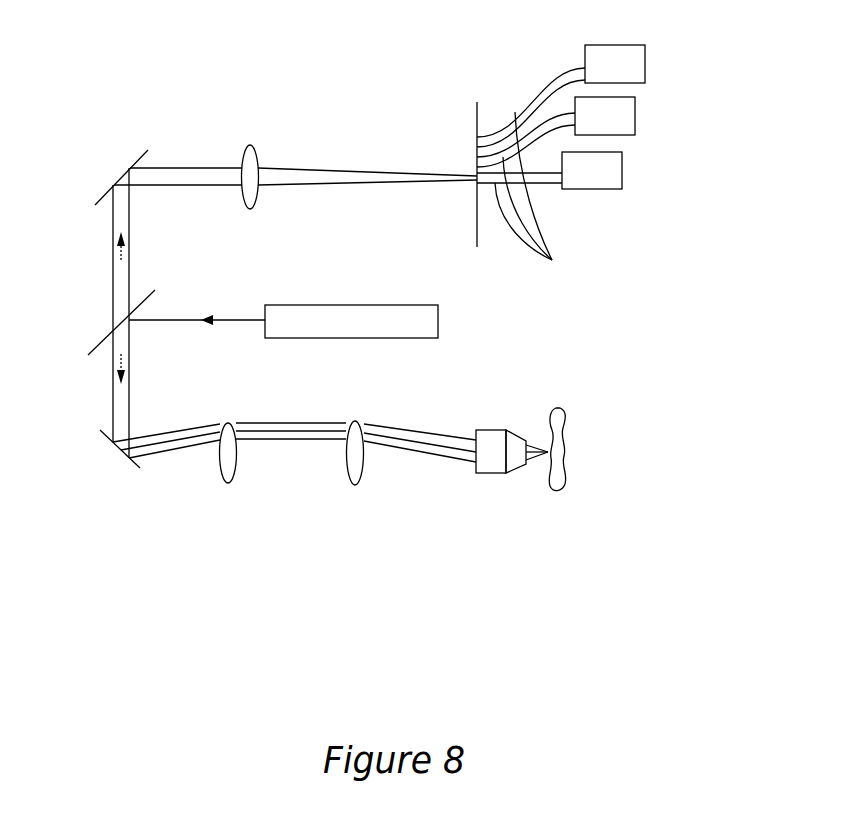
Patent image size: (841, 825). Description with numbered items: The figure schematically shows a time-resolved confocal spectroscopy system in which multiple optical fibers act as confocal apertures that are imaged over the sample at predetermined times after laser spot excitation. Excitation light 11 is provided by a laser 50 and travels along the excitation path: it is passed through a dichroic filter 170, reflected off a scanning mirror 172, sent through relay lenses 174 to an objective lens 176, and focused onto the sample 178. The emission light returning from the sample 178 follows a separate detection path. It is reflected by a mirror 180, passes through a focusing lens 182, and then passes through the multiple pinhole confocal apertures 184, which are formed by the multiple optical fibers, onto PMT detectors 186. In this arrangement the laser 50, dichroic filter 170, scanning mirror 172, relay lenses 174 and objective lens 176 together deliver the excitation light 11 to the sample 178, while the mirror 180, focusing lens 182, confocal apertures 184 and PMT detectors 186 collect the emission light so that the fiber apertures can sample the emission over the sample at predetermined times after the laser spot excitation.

The excitation light 11 is at (160, 321).
The laser 50 is at (313, 330).
The dichroic filter 170 is at (95, 345).
The scanning mirror 172 is at (101, 438).
The relay lenses 174 is at (352, 470).
The objective lens 176 is at (487, 470).
The sample 178 is at (566, 440).
The mirror 180 is at (100, 193).
The focusing lens 182 is at (252, 160).
The multiple pinhole confocal apertures 184 is at (540, 172).
The PMT detectors 186 is at (612, 170).